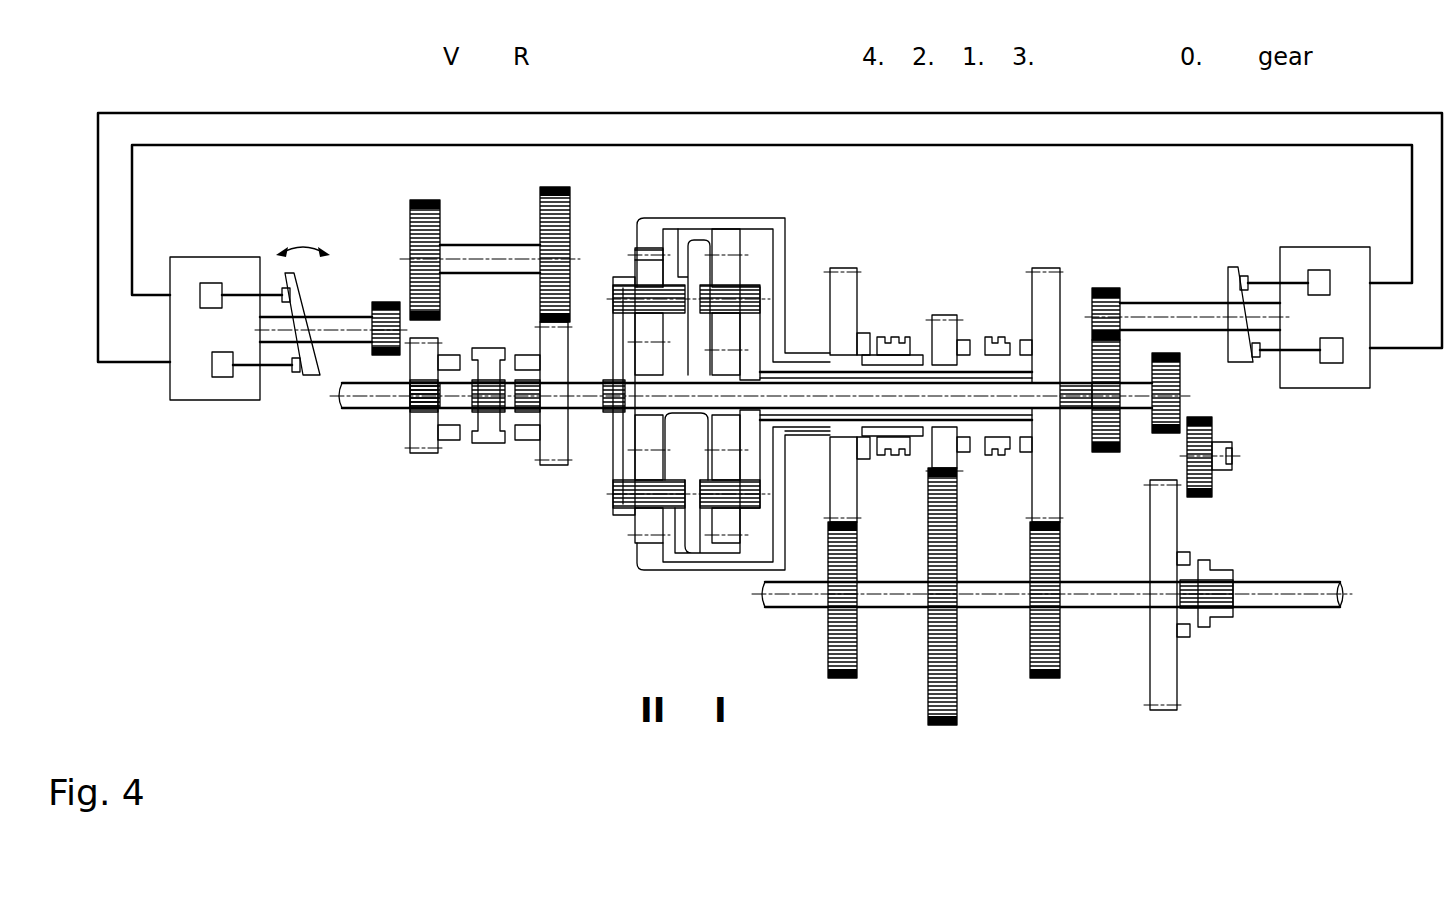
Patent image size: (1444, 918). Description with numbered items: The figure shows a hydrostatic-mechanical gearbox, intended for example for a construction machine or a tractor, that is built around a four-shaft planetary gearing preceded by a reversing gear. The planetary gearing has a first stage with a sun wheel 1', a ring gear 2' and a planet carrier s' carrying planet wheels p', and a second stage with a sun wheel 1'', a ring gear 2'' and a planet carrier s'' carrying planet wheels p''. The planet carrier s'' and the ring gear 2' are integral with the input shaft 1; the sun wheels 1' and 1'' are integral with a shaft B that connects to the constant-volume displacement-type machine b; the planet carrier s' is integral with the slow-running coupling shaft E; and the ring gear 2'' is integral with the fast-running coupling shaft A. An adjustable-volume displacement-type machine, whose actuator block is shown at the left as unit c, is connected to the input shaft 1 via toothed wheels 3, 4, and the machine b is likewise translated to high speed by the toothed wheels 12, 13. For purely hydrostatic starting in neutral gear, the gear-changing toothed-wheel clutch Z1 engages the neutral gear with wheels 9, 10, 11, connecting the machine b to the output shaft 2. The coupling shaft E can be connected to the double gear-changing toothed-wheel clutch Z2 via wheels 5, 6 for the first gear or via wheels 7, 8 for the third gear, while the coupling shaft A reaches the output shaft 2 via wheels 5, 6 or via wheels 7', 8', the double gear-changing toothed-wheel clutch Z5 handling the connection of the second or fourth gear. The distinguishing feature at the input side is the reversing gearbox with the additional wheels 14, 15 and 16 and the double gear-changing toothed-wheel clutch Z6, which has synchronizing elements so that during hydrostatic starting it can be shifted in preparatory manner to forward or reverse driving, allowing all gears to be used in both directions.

The input shaft 1 is at (760, 416).
The output shaft 2 is at (1052, 572).
The toothed wheel 3 is at (418, 437).
The toothed wheel 4 is at (381, 302).
The toothed wheel 5 is at (932, 335).
The toothed wheel 6 is at (928, 727).
The toothed wheel 7 is at (1045, 373).
The toothed wheel 7' is at (851, 373).
The toothed wheel 8 is at (1062, 600).
The toothed wheel 8' is at (825, 600).
The toothed wheel 9 is at (1181, 360).
The toothed wheel 10 is at (1210, 420).
The toothed wheel 11 is at (1157, 692).
The toothed wheel 12 is at (1110, 296).
The toothed wheel 13 is at (1110, 452).
The toothed wheel 14 is at (430, 203).
The toothed wheel 15 is at (548, 188).
The toothed wheel 16 is at (562, 447).
The sun wheel 1' is at (702, 483).
The sun wheel 1'' is at (682, 302).
The ring gear 2' is at (726, 360).
The ring gear 2'' is at (729, 374).
The planet wheels p' is at (738, 366).
The planet wheels p'' is at (636, 363).
The planet carrier s' is at (754, 414).
The planet carrier s'' is at (609, 396).
The fast-running coupling shaft A is at (800, 357).
The shaft B is at (1072, 407).
The slow-running coupling shaft E is at (812, 422).
The constant-volume displacement-type machine b is at (1348, 380).
The actuator c is at (192, 395).
The gear-changing toothed-wheel clutch Z1 is at (1209, 628).
The double gear-changing toothed-wheel clutch Z2 is at (996, 370).
The double gear-changing toothed-wheel clutch Z5 is at (896, 370).
The double gear-changing toothed-wheel clutch Z6 is at (490, 426).